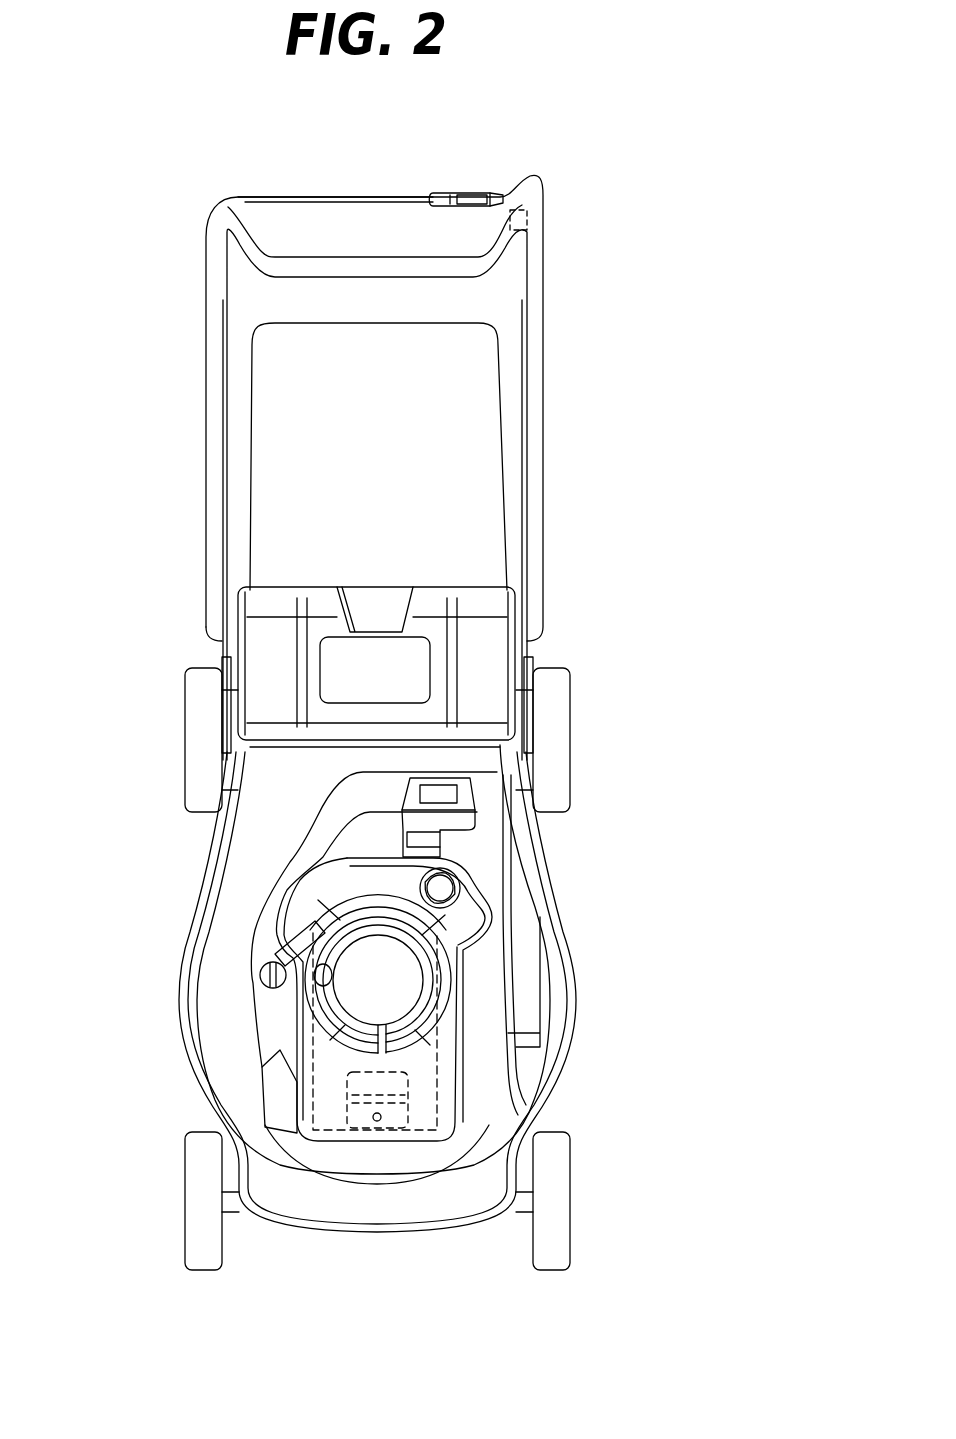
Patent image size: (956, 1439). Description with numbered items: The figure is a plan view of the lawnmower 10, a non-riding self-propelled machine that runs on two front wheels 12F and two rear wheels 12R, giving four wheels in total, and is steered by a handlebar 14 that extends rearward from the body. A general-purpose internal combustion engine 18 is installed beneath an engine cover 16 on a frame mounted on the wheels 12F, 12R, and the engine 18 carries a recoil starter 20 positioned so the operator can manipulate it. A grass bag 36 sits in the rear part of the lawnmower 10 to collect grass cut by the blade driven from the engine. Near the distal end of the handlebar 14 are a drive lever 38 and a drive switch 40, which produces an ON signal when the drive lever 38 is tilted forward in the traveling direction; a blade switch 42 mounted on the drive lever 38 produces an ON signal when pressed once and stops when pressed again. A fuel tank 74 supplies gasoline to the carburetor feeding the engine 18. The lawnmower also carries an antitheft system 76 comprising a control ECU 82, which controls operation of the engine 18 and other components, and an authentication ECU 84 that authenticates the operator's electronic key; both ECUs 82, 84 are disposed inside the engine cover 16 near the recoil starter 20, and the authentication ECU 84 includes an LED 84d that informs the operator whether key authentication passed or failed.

The lawnmower 10 is at (571, 177).
The front wheels 12F is at (198, 1240).
The rear wheels 12R is at (200, 791).
The handlebar 14 is at (545, 412).
The engine cover 16 is at (460, 1081).
The engine 18 is at (445, 1053).
The recoil starter 20 is at (292, 955).
The grass bag 36 is at (483, 355).
The drive lever 38 is at (296, 196).
The drive switch 40 is at (537, 223).
The blade switch 42 is at (470, 192).
The fuel tank 74 is at (472, 901).
The antitheft system 76 is at (334, 1095).
The control ECU 82 is at (430, 1132).
The authentication ECU 84 is at (350, 1130).
The LED 84d is at (377, 1122).